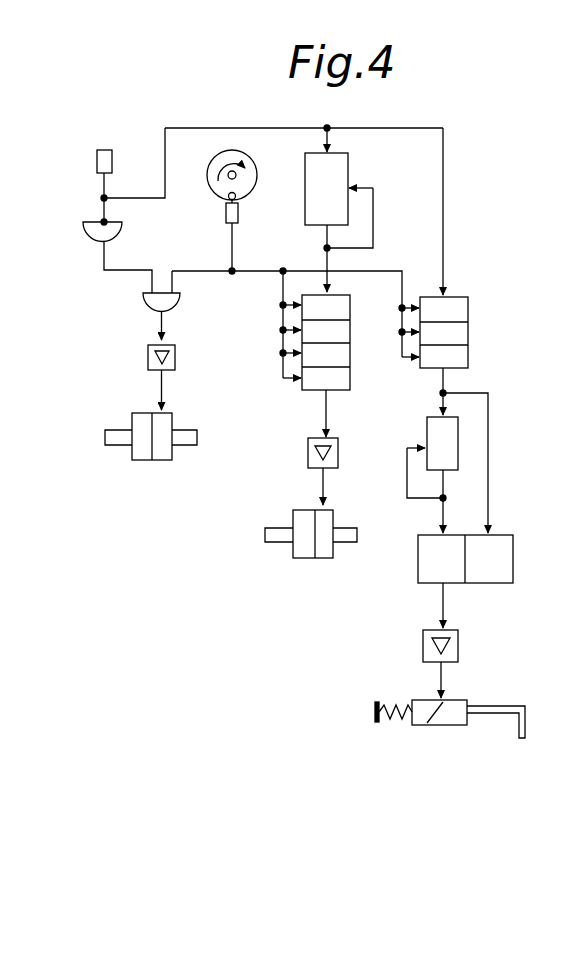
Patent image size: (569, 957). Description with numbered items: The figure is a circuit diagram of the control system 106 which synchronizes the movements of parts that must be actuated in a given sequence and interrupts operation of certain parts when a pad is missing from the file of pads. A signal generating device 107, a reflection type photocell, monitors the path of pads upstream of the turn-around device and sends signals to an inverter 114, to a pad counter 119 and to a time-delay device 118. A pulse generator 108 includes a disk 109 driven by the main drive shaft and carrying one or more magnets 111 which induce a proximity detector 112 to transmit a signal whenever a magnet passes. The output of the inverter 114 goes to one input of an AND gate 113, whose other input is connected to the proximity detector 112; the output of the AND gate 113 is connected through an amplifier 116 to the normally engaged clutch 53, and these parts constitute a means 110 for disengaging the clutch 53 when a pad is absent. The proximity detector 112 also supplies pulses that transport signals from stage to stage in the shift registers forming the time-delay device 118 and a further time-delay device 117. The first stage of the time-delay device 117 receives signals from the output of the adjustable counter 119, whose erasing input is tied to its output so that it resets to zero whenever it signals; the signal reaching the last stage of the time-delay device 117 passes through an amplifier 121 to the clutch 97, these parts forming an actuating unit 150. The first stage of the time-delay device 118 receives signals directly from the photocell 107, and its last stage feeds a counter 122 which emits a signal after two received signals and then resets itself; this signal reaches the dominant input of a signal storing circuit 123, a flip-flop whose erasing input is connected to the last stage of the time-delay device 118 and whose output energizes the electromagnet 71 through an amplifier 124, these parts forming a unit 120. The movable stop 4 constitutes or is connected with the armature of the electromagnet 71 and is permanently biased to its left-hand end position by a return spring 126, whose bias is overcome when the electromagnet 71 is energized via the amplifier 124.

The movable stop 4 is at (527, 720).
The clutch 53 is at (150, 465).
The electromagnet 71 is at (440, 723).
The clutch 97 is at (312, 568).
The control system 106 is at (202, 100).
The signal generating device 107 is at (105, 163).
The pulse generator 108 is at (223, 207).
The disk 109 is at (212, 180).
The means for disengaging the clutch 110 is at (163, 488).
The magnet 111 is at (240, 197).
The proximity detector 112 is at (238, 215).
The AND gate 113 is at (180, 305).
The inverter 114 is at (97, 235).
The amplifier 116 is at (175, 358).
The time-delay device 117 is at (293, 402).
The time-delay device 118 is at (472, 293).
The pad counter 119 is at (348, 160).
The unit 120 is at (436, 780).
The amplifier 121 is at (335, 440).
The counter 122 is at (458, 446).
The signal storing circuit 123 is at (430, 570).
The amplifier 124 is at (458, 650).
The return spring 126 is at (397, 723).
The actuating unit 150 is at (317, 603).